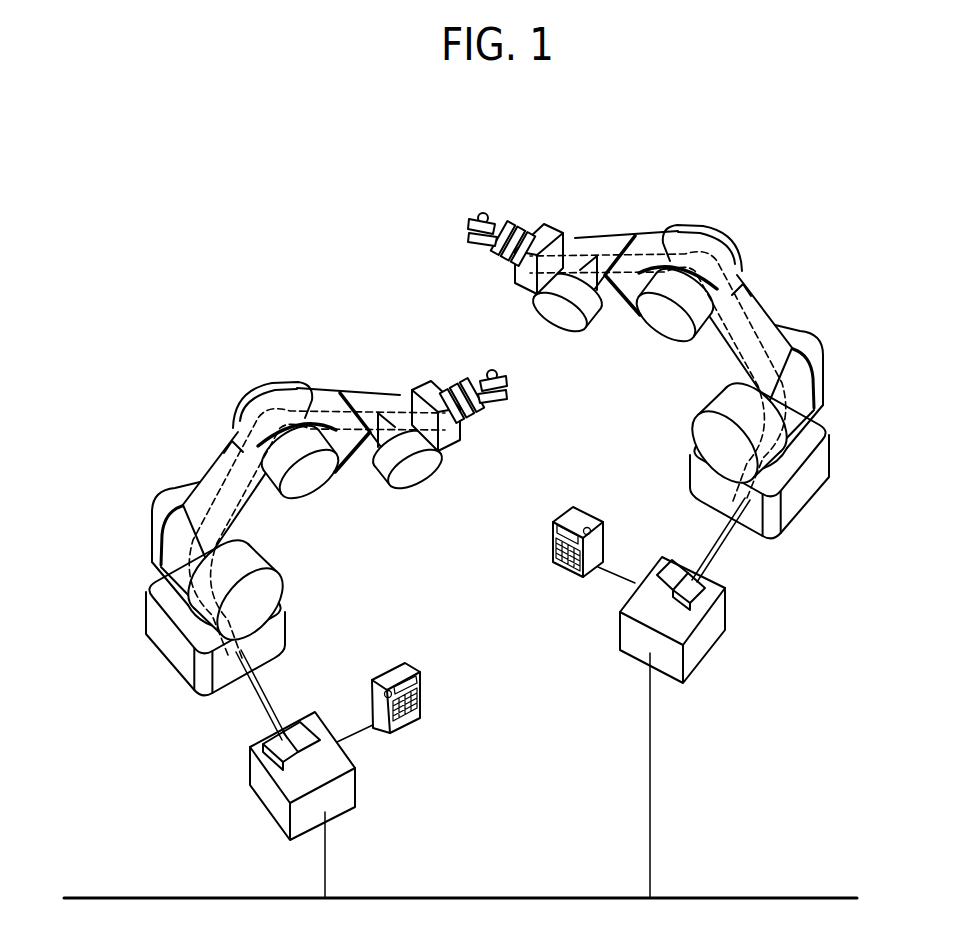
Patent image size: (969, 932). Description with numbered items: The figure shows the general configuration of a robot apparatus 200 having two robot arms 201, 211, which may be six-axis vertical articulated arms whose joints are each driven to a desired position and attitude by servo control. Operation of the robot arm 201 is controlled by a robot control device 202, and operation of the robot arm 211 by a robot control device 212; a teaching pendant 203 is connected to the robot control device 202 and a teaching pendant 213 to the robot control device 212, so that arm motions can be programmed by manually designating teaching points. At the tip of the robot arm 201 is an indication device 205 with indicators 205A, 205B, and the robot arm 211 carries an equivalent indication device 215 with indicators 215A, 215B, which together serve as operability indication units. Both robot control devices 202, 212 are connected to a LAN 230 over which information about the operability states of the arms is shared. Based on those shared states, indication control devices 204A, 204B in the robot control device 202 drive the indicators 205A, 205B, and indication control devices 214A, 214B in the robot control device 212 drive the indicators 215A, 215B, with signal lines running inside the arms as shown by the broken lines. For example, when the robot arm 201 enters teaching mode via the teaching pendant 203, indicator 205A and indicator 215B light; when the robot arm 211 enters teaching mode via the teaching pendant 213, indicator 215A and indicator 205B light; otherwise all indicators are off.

The robot apparatus 200 is at (338, 262).
The robot arm 201 is at (746, 230).
The robot control device 202 is at (704, 637).
The teaching pendant 203 is at (589, 519).
The indication control device 204A is at (707, 577).
The indication control device 204B is at (675, 565).
The indication device 205 is at (532, 207).
The indicator 205A is at (515, 223).
The indicator 205B is at (483, 247).
The robot arm 211 is at (255, 378).
The robot control device 212 is at (267, 800).
The teaching pendant 213 is at (393, 673).
The indication control device 214A is at (272, 739).
The indication control device 214B is at (297, 728).
The indication device 215 is at (477, 430).
The indicator 215A is at (465, 382).
The indicator 215B is at (488, 418).
The LAN 230 is at (773, 898).